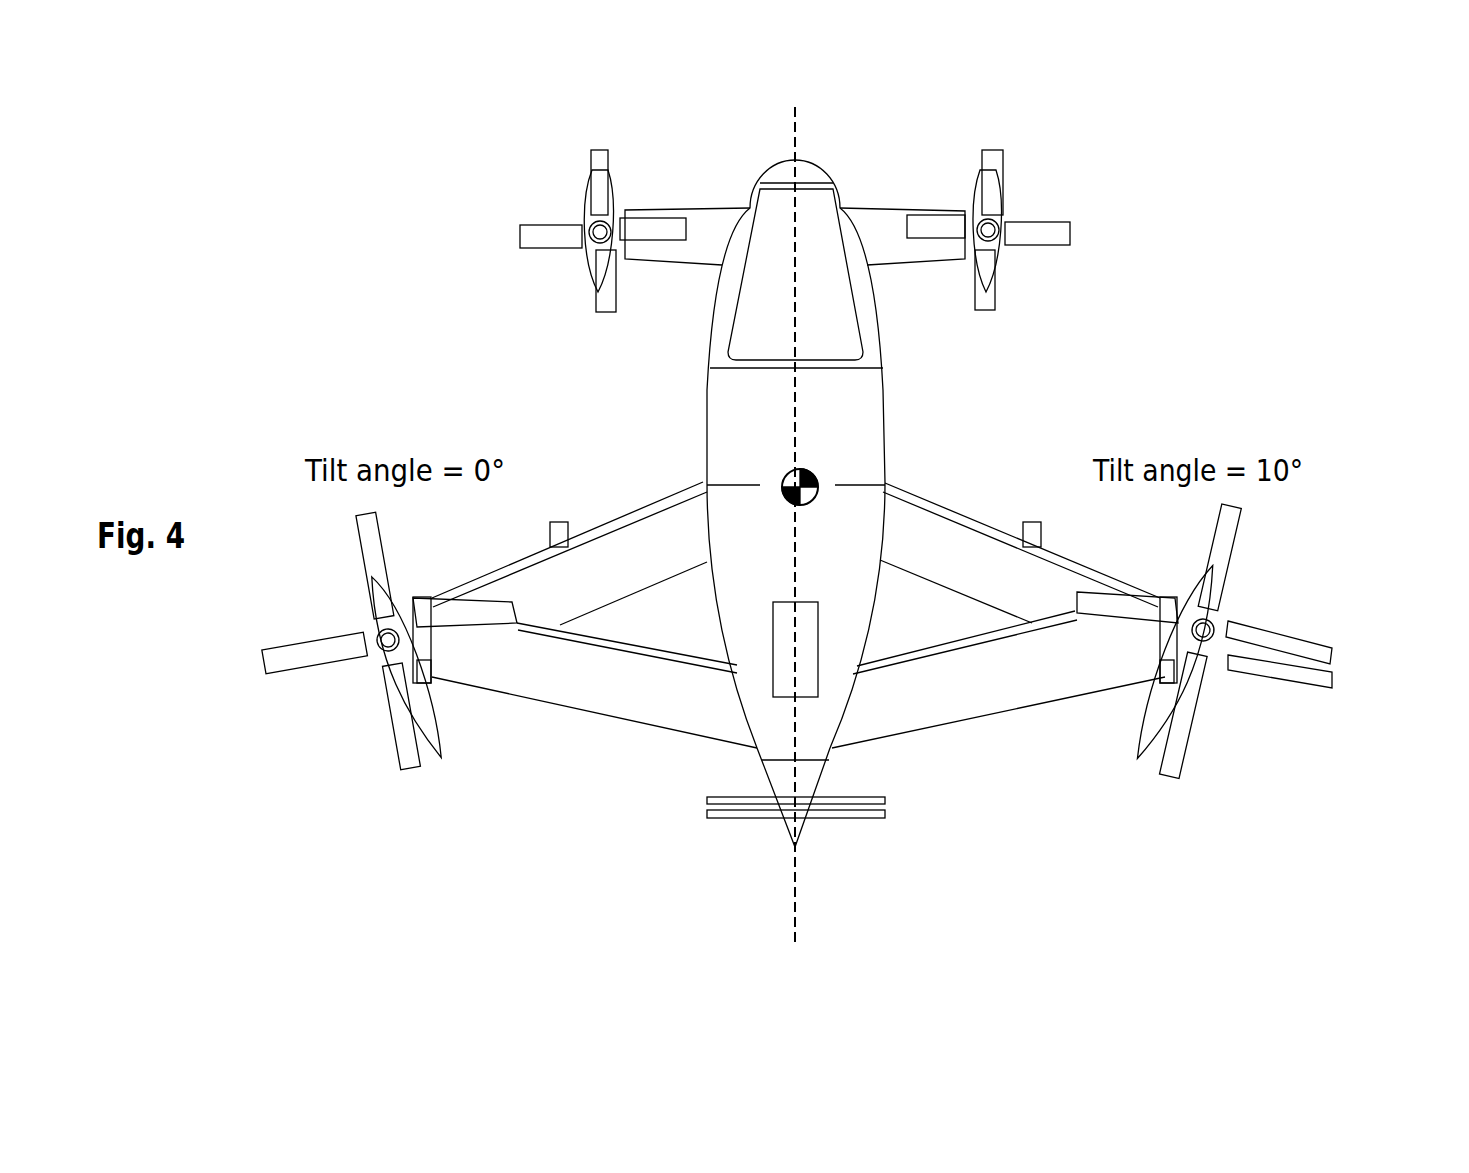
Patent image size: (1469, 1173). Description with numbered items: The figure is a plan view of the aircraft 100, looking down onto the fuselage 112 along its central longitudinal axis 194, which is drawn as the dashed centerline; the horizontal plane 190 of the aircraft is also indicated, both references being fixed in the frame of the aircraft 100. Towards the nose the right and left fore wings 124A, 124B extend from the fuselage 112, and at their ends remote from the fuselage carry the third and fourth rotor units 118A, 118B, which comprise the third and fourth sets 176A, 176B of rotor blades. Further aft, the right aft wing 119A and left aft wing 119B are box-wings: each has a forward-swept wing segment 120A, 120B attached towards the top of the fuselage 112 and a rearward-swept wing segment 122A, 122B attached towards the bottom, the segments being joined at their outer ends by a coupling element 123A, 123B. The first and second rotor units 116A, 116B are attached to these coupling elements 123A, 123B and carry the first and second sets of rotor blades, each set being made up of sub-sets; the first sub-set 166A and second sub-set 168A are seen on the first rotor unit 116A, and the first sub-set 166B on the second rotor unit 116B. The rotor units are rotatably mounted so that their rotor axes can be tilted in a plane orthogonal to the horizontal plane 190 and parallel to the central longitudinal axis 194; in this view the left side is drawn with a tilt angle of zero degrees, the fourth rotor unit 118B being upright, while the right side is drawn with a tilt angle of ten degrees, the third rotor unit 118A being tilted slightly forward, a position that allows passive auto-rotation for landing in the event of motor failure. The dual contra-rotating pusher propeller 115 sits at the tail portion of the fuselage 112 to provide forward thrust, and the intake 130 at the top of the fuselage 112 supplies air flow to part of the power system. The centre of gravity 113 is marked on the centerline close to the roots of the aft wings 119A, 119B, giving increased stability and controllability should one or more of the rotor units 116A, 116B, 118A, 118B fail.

The aircraft 100 is at (491, 454).
The fuselage 112 is at (727, 455).
The centre of gravity 113 is at (792, 502).
The dual contra-rotating pusher propeller 115 is at (832, 815).
The first rotor unit 116A is at (1271, 645).
The second rotor unit 116B is at (313, 651).
The third rotor unit 118A is at (1084, 244).
The fourth rotor unit 118B is at (513, 244).
The right aft wing 119A is at (1046, 697).
The left aft wing 119B is at (482, 685).
The forward-swept wing segment 120A is at (865, 712).
The forward-swept wing segment 120B is at (633, 693).
The rearward-swept wing segment 122A is at (917, 555).
The rearward-swept wing segment 122B is at (633, 558).
The coupling element 123A is at (1168, 647).
The coupling element 123B is at (466, 686).
The right fore wing 124A is at (887, 243).
The left fore wing 124B is at (703, 243).
The intake 130 is at (818, 600).
The first sub-set of rotor blades 166A is at (1320, 643).
The first sub-set of rotor blades 166B is at (270, 662).
The second sub-set of rotor blades 168A is at (1308, 673).
The third set of rotor blades 176A is at (1045, 233).
The fourth set of rotor blades 176B is at (543, 233).
The horizontal plane 190 is at (1137, 394).
The central longitudinal axis 194 is at (797, 116).